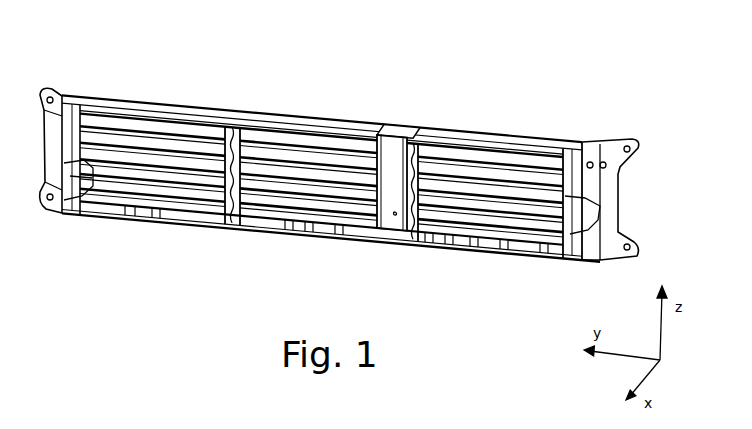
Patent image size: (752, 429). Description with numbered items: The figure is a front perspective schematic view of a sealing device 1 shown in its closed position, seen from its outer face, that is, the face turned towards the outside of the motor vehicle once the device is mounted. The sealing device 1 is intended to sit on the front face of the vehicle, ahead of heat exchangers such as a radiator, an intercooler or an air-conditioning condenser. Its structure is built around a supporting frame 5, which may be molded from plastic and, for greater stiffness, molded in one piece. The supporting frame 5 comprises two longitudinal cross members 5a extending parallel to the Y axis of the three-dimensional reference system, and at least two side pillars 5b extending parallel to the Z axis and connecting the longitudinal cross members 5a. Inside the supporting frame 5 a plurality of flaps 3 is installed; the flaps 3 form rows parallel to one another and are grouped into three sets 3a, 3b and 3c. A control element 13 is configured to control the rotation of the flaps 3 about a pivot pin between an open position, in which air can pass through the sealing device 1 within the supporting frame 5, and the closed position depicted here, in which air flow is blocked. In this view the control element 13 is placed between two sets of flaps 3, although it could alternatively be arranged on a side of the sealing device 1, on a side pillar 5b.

The sealing device 1 is at (128, 58).
The flaps 3 is at (283, 120).
The set of flaps 3a is at (447, 228).
The set of flaps 3b is at (320, 205).
The set of flaps 3c is at (160, 196).
The supporting frame 5 is at (192, 104).
The longitudinal cross members 5a is at (518, 140).
The side pillars 5b is at (597, 142).
The control element 13 is at (392, 143).